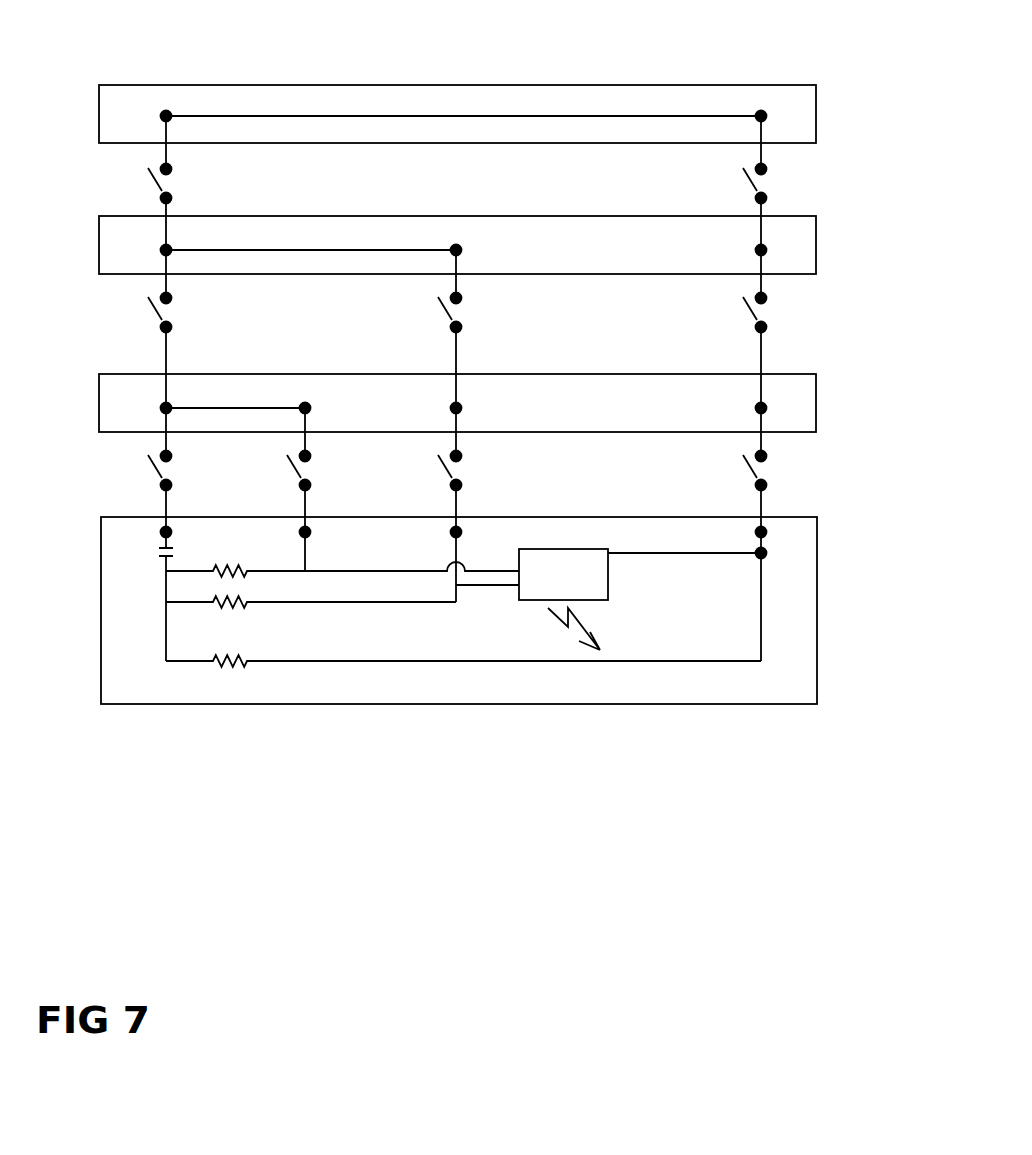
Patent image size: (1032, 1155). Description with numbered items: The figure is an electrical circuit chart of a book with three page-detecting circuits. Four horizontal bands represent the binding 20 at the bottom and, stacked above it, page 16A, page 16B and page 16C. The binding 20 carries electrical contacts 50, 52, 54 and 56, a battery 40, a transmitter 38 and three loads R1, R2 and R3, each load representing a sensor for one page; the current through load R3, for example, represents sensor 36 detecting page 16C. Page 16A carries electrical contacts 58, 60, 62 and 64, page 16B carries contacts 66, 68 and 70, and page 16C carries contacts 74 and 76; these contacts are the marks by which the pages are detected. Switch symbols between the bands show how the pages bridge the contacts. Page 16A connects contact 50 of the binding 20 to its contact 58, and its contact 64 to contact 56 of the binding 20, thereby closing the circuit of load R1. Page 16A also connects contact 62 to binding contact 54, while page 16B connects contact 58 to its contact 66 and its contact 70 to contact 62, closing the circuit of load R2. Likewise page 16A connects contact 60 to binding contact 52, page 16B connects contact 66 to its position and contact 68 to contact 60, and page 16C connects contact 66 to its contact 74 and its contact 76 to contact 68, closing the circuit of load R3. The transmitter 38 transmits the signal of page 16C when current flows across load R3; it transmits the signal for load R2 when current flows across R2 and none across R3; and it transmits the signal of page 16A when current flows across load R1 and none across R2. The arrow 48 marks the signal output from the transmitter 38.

The page 16A is at (810, 402).
The page 16B is at (807, 248).
The page 16C is at (807, 113).
The binding 20 is at (800, 542).
The sensor 36 is at (781, 565).
The transmitter 38 is at (563, 574).
The battery 40 is at (152, 552).
The output signal 48 is at (566, 632).
The electrical contact 50 is at (187, 532).
The electrical contact 52 is at (741, 532).
The electrical contact 54 is at (439, 532).
The electrical contact 56 is at (326, 532).
The electrical contact 58 is at (149, 409).
The electrical contact 60 is at (743, 409).
The electrical contact 62 is at (439, 409).
The electrical contact 64 is at (326, 409).
The electrical contact 66 is at (148, 250).
The electrical contact 68 is at (744, 249).
The electrical contact 70 is at (477, 247).
The electrical contact 74 is at (151, 106).
The electrical contact 76 is at (767, 103).
The load R1 is at (342, 554).
The load R2 is at (311, 593).
The load R3 is at (463, 653).